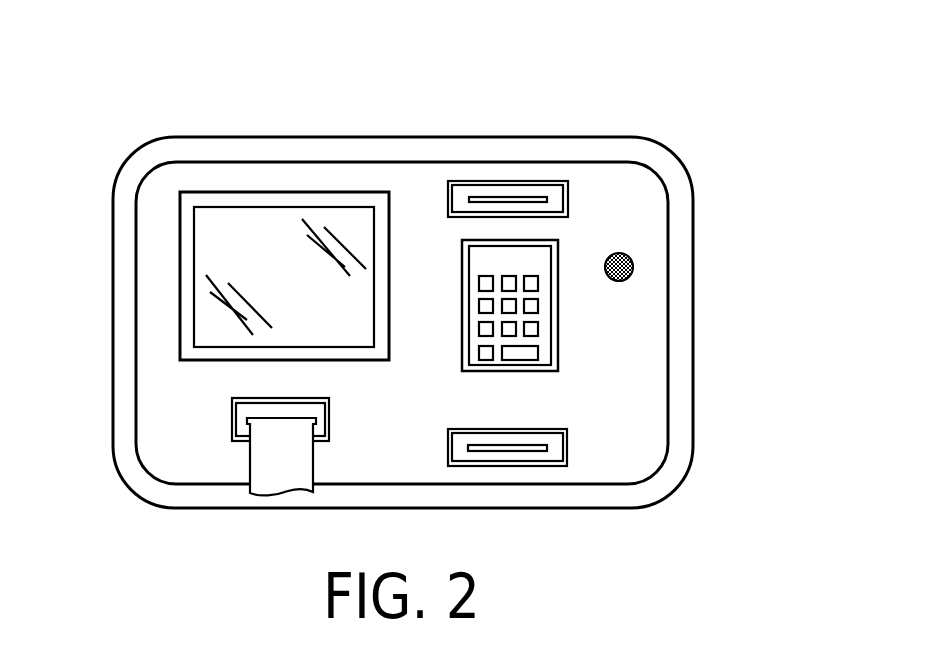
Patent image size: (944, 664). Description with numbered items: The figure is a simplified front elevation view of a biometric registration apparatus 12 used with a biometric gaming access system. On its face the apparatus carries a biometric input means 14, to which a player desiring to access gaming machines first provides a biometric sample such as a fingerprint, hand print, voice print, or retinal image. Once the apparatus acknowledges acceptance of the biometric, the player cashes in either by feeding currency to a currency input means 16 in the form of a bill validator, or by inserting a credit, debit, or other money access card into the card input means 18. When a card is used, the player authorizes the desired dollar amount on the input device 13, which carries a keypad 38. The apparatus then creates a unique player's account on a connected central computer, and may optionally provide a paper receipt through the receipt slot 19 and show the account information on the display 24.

The biometric registration apparatus 12 is at (708, 118).
The display 24 is at (263, 217).
The card input means 18 is at (502, 182).
The biometric input means 14 is at (633, 263).
The keypad 38 is at (535, 306).
The input device 13 is at (558, 333).
The receipt slot 19 is at (233, 415).
The currency input means 16 is at (567, 443).